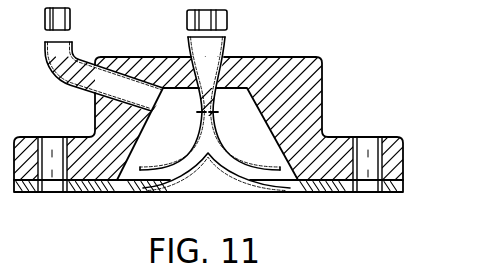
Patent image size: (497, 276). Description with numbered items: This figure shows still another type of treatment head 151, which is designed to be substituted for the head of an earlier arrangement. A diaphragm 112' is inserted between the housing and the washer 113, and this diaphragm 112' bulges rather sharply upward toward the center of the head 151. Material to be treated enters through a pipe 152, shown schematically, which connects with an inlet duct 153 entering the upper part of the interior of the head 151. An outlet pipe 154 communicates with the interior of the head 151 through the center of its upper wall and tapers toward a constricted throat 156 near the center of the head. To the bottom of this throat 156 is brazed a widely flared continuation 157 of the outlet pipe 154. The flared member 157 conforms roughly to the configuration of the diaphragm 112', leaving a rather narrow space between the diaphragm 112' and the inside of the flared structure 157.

The treatment head 151 is at (307, 78).
The pipe 152 is at (73, 52).
The inlet duct 153 is at (120, 89).
The outlet pipe 154 is at (217, 49).
The constricted throat 156 is at (214, 100).
The flared continuation 157 is at (227, 143).
The diaphragm 112' is at (216, 184).
The washer 113 is at (403, 183).